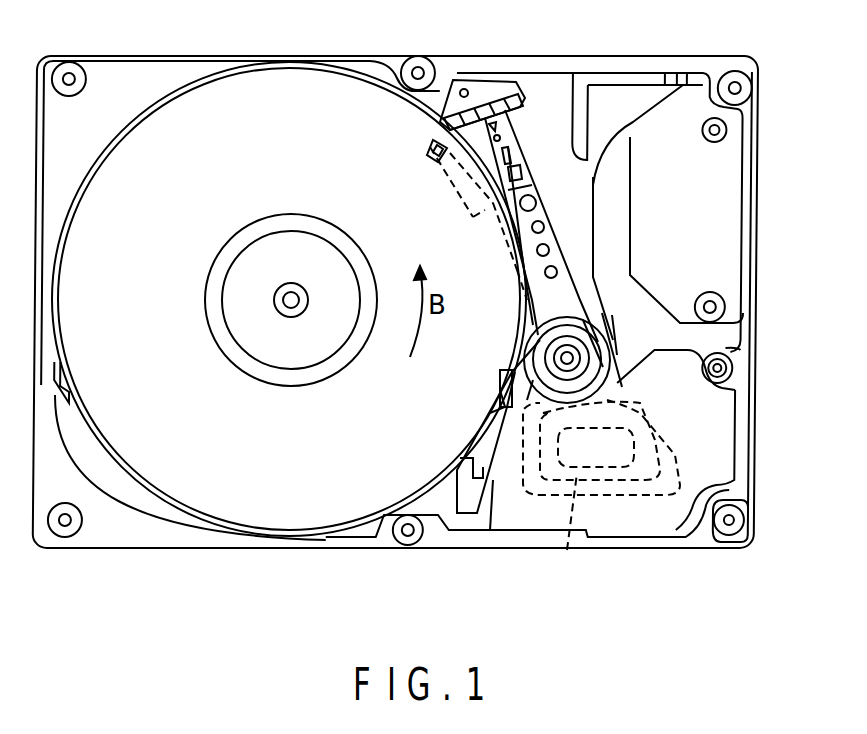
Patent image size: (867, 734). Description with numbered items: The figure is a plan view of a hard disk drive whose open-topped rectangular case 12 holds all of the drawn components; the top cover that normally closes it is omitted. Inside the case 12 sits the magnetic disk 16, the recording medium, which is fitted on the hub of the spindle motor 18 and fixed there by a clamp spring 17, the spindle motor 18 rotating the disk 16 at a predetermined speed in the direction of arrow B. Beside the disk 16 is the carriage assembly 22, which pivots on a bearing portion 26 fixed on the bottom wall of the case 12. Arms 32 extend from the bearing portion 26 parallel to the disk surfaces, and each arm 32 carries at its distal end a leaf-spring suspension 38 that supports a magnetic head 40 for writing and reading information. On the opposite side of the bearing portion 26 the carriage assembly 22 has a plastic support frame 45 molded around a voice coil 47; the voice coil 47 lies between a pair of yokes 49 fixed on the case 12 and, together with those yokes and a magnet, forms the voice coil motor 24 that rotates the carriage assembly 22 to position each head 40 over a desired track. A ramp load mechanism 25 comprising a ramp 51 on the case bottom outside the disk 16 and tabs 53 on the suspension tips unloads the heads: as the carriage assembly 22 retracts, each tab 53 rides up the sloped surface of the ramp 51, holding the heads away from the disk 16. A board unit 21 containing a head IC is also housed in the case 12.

The case 12 is at (142, 57).
The magnetic disk 16 is at (297, 60).
The clamp spring 17 is at (290, 360).
The spindle motor 18 is at (203, 308).
The board unit 21 is at (668, 112).
The carriage assembly 22 is at (556, 201).
The voice coil motor 24 is at (515, 440).
The ramp load mechanism 25 is at (473, 74).
The bearing portion 26 is at (533, 362).
The arm 32 is at (578, 283).
The suspension 38 is at (518, 150).
The magnetic head 40 is at (430, 153).
The support frame 45 is at (660, 423).
The voice coil 47 is at (567, 555).
The yoke 49 is at (732, 415).
The ramp 51 is at (513, 90).
The tab 53 is at (427, 140).